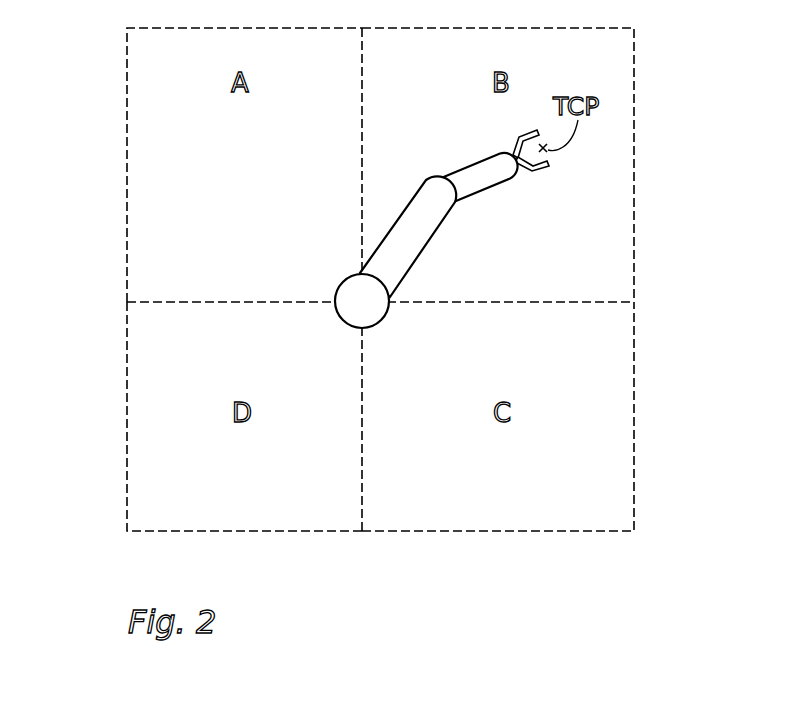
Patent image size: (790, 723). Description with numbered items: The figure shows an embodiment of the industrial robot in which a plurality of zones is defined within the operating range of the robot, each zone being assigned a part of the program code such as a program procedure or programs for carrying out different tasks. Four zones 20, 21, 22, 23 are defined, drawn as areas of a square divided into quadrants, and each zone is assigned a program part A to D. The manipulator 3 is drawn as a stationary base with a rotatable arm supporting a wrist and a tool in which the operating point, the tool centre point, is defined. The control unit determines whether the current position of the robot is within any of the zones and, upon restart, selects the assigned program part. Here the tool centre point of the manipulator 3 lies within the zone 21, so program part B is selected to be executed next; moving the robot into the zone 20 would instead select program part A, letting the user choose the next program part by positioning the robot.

The manipulator 3 is at (413, 199).
The zone 20 is at (140, 210).
The zone 21 is at (618, 208).
The zone 22 is at (140, 407).
The zone 23 is at (618, 406).